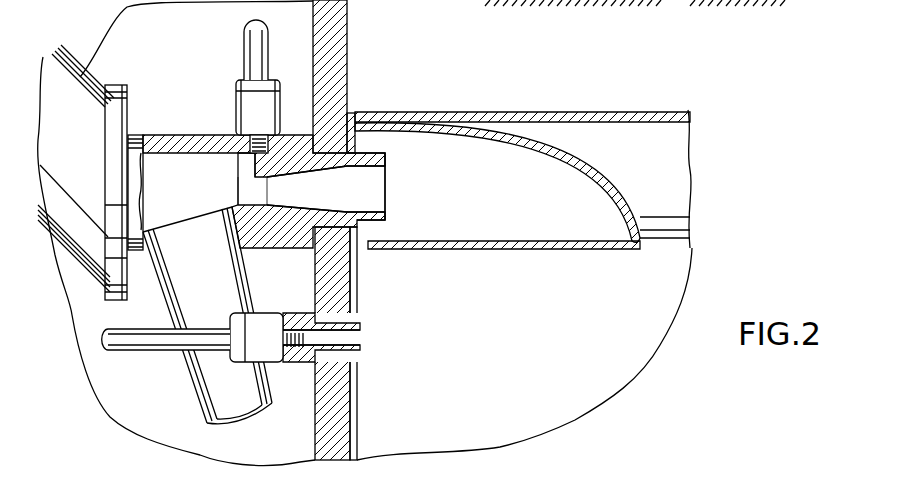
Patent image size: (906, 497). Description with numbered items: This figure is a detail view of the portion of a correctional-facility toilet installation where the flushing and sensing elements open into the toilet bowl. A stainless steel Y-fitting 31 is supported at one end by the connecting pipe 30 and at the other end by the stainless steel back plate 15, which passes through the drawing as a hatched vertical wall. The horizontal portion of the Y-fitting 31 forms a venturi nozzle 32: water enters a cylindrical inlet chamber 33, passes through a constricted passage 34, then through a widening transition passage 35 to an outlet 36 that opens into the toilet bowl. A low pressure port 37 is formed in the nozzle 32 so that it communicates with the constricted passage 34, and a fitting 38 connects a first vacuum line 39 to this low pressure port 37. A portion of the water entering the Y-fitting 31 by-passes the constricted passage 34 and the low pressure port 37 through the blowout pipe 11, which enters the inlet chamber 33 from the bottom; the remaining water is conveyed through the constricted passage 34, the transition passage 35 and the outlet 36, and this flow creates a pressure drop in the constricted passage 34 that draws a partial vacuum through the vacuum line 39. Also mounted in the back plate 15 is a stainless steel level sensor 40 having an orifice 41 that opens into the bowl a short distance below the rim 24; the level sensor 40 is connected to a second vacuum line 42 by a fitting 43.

The blowout pipe 11 is at (197, 413).
The back plate 15 is at (347, 35).
The rim 24 is at (650, 167).
The connecting pipe 30 is at (80, 77).
The Y-fitting 31 is at (203, 122).
The venturi nozzle 32 is at (382, 230).
The inlet chamber 33 is at (190, 186).
The constricted passage 34 is at (250, 194).
The transition passage 35 is at (323, 203).
The outlet 36 is at (385, 172).
The low pressure port 37 is at (262, 172).
The fitting 38 is at (297, 74).
The first vacuum line 39 is at (267, 40).
The level sensor 40 is at (363, 327).
The orifice 41 is at (360, 333).
The second vacuum line 42 is at (147, 352).
The fitting 43 is at (303, 363).